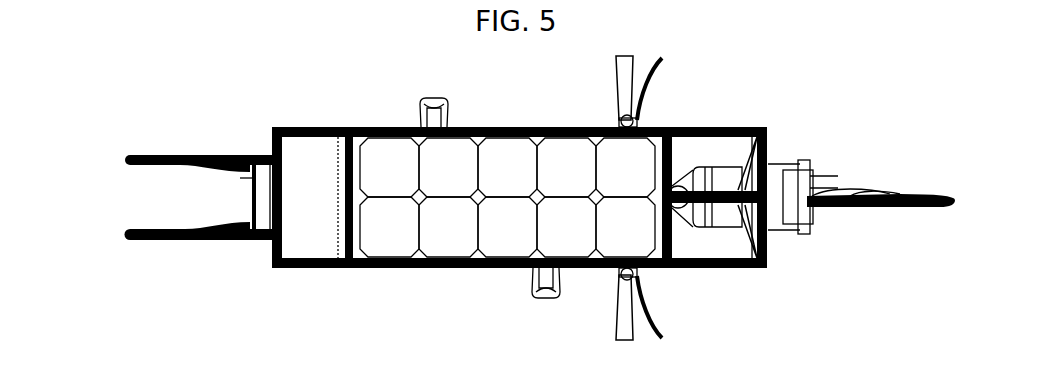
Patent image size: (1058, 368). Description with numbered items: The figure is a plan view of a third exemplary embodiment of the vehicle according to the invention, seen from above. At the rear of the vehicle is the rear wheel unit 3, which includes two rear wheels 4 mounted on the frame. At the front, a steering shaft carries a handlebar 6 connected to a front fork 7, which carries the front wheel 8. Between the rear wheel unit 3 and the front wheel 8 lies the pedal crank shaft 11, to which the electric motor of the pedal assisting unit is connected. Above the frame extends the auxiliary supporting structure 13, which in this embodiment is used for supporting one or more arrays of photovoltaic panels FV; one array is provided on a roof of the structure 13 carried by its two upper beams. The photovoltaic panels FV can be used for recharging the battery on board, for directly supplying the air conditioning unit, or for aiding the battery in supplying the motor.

The rear wheel unit 3 is at (97, 222).
The rear wheels 4 is at (142, 153).
The handlebar 6 is at (648, 115).
The front fork 7 is at (708, 225).
The front wheel 8 is at (918, 221).
The pedal crank shaft 11 is at (536, 286).
The auxiliary supporting structure 13 is at (303, 118).
The photovoltaic panels FV is at (450, 238).